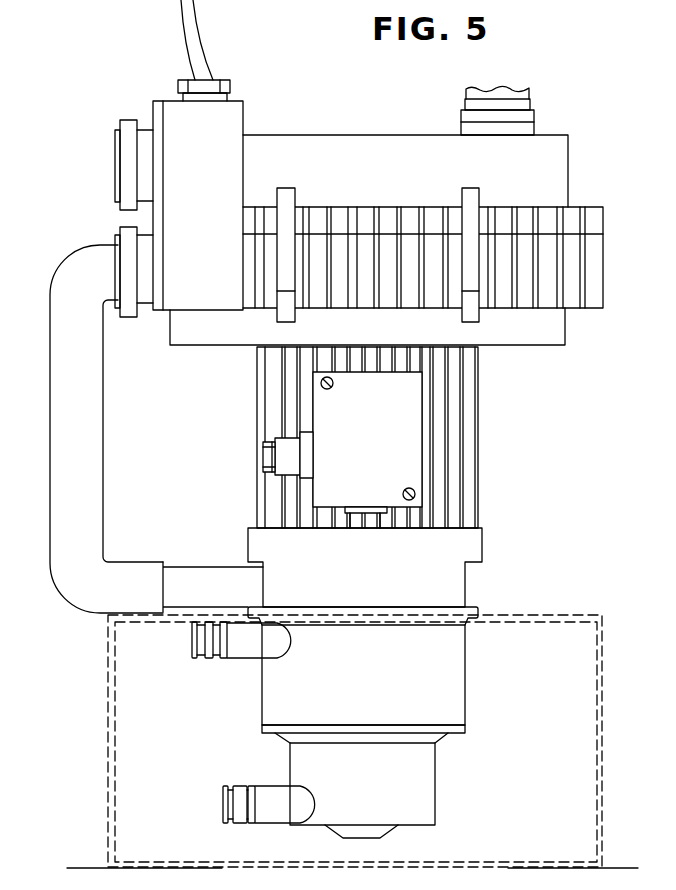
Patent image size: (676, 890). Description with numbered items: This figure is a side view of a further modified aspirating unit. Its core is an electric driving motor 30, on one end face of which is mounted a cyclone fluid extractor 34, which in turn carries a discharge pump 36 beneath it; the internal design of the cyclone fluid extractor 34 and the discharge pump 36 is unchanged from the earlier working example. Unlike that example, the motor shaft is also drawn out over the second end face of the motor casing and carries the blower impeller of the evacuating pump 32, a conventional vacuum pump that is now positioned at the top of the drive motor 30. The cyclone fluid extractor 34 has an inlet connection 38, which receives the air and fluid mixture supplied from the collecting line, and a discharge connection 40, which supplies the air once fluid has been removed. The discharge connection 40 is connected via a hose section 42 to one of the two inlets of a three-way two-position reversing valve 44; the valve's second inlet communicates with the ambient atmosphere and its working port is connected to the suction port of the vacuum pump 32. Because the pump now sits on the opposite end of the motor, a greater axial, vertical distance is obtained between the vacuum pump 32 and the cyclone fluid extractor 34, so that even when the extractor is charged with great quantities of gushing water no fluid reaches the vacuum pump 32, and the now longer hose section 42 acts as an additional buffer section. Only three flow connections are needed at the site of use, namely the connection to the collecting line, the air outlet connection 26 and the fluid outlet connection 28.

The air outlet connection 26 is at (516, 92).
The fluid outlet connection 28 is at (260, 797).
The electric driving motor 30 is at (436, 437).
The evacuating pump 32 is at (542, 268).
The cyclone fluid extractor 34 is at (420, 667).
The discharge pump 36 is at (405, 793).
The inlet connection 38 is at (245, 650).
The discharge connection 40 is at (190, 597).
The hose section 42 is at (57, 433).
The 3/2 reversing valve 44 is at (182, 170).